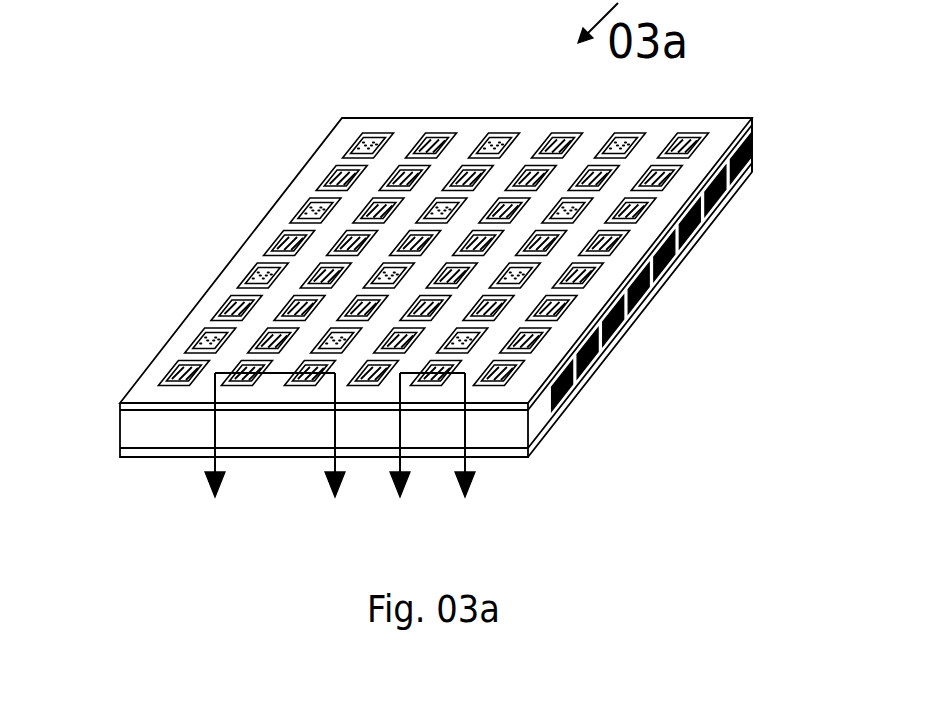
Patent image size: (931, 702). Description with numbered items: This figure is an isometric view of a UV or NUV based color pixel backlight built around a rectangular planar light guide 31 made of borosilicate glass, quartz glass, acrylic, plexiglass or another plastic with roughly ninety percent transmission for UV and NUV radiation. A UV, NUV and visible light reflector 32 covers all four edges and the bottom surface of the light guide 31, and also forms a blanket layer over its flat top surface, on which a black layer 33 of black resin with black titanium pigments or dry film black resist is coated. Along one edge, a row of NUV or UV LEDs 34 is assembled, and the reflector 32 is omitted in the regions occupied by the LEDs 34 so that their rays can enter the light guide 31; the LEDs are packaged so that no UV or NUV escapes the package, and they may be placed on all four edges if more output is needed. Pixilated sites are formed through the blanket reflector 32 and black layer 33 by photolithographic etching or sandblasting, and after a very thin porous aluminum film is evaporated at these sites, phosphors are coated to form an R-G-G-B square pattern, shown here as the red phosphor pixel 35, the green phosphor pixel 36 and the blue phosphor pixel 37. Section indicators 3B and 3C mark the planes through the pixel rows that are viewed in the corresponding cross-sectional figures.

The rectangular planar light guide 31 is at (767, 113).
The UV, NUV and visible light reflector 32 is at (120, 405).
The black layer 33 is at (143, 385).
The NUV or UV LEDs 34 is at (598, 355).
The red phosphor pixel 35 is at (368, 137).
The green phosphor pixel 36 is at (438, 137).
The blue phosphor pixel 37 is at (408, 175).
The section line 3B is at (444, 463).
The section line 3C is at (275, 463).